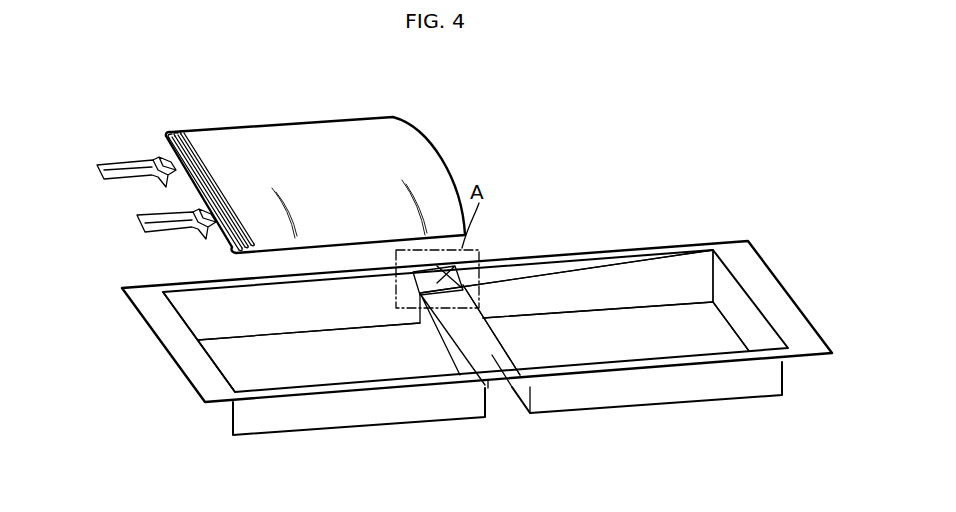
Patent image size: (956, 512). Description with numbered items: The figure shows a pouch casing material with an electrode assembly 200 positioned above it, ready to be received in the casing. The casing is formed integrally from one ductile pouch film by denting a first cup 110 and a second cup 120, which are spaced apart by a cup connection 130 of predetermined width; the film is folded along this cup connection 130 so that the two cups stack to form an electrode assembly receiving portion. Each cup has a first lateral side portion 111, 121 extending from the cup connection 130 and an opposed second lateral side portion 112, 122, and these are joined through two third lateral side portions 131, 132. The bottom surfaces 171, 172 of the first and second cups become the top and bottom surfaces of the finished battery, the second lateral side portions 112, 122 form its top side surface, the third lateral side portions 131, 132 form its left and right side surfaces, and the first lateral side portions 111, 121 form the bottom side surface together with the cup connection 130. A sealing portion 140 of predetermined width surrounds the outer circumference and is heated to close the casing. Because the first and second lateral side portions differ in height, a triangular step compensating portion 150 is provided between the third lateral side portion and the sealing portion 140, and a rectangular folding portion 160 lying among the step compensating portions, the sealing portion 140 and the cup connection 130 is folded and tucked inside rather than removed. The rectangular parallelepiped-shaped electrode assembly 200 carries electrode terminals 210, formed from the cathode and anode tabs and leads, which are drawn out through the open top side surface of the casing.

The first cup 110 is at (318, 362).
The first lateral side portion of the first cup 111 is at (458, 360).
The second lateral side portion of the first cup 112 is at (228, 412).
The second cup 120 is at (618, 333).
The first lateral side portion of the second cup 121 is at (500, 346).
The second lateral side portion of the second cup 122 is at (753, 323).
The cup connection 130 is at (493, 360).
The third lateral side portion 131 is at (216, 311).
The third lateral side portion 132 is at (664, 282).
The sealing portion 140 is at (772, 297).
The step compensating portion 150 is at (560, 270).
The folding portion 160 is at (445, 272).
The bottom surface of the first cup 171 is at (367, 357).
The bottom surface of the second cup 172 is at (656, 336).
The electrode assembly 200 is at (261, 120).
The electrode terminals 210 is at (98, 167).